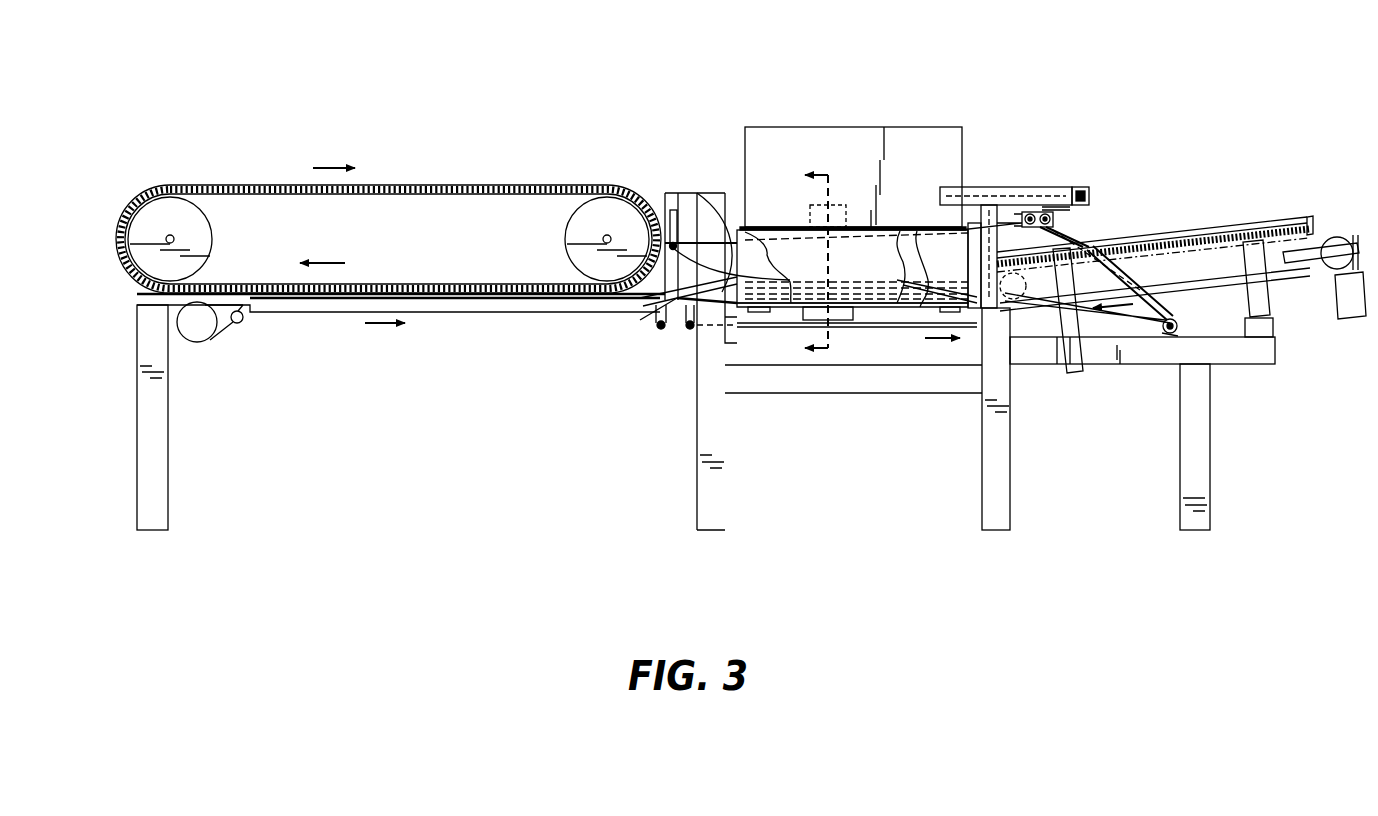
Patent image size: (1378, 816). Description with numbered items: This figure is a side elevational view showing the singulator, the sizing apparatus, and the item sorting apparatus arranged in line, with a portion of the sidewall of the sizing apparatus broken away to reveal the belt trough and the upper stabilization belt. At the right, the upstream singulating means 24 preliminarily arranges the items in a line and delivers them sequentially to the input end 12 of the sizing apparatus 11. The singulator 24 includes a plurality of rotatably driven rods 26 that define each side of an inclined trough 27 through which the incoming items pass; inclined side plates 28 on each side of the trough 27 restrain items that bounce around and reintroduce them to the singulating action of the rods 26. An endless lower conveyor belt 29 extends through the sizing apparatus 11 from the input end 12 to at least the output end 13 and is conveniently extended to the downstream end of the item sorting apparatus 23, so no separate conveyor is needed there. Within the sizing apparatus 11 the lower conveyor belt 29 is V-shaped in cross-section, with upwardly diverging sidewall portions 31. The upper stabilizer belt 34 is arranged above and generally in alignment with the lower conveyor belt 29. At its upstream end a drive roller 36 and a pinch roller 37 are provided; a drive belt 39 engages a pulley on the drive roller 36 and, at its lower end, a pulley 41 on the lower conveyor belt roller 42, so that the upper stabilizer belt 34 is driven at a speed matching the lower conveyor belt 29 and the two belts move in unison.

The sizing apparatus 11 is at (883, 88).
The input end 12 is at (993, 165).
The output end 13 is at (730, 175).
The item sorting apparatus 23 is at (420, 160).
The singulating means 24 is at (1220, 190).
The rotatably driven rods 26 is at (1290, 228).
The inclined trough 27 is at (1318, 228).
The inclined side plates 28 is at (1243, 218).
The lower conveyor belt 29 is at (300, 318).
The sidewall portions 31 is at (907, 260).
The upper stabilizer belt 34 is at (717, 243).
The drive roller 36 is at (1057, 206).
The pinch roller 37 is at (1033, 206).
The drive belt 39 is at (1166, 305).
The pulley 41 is at (1215, 355).
The lower conveyor belt roller 42 is at (1180, 327).